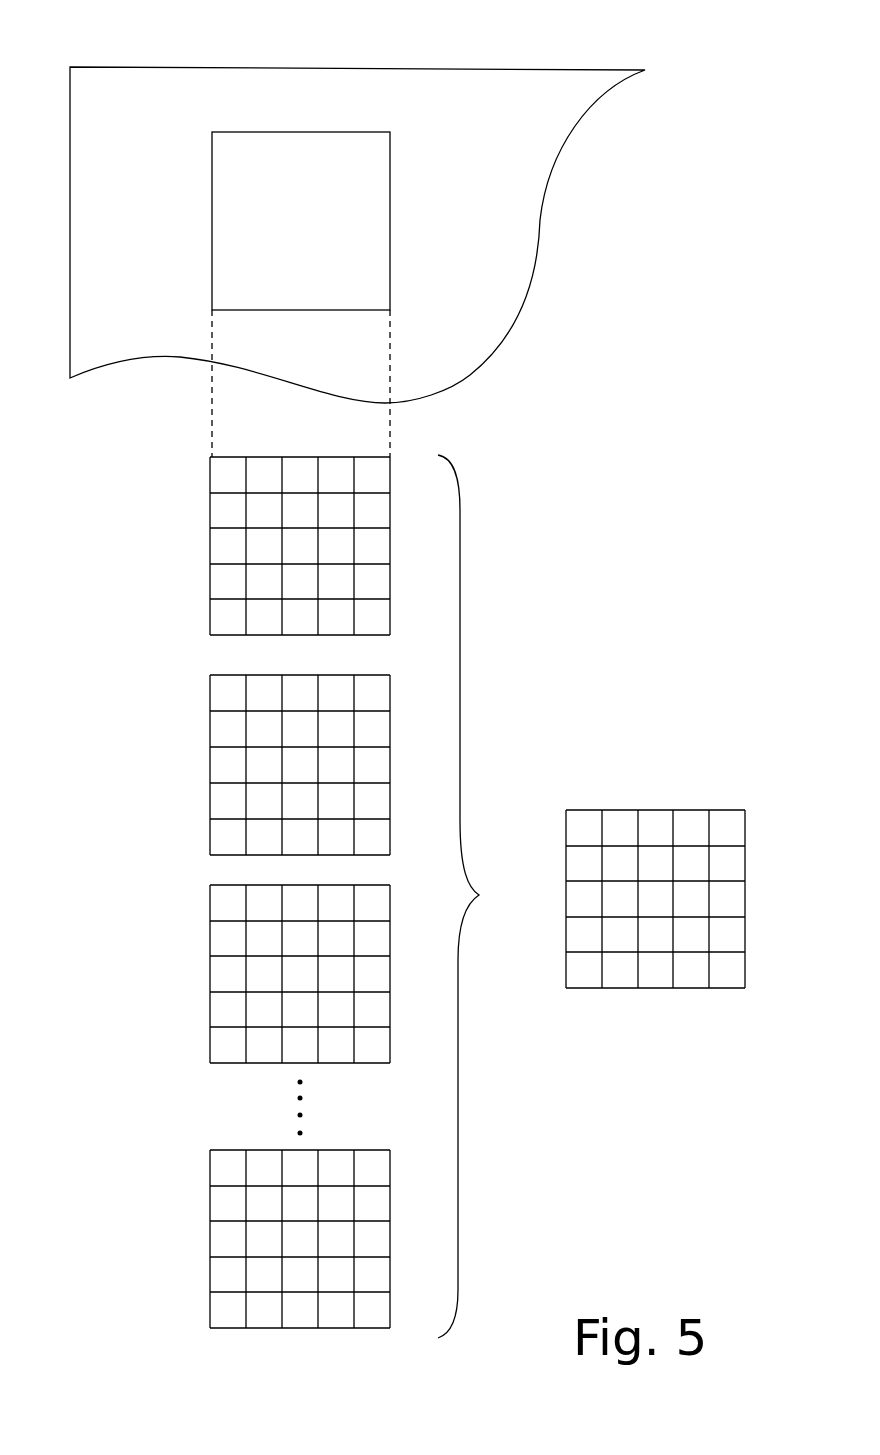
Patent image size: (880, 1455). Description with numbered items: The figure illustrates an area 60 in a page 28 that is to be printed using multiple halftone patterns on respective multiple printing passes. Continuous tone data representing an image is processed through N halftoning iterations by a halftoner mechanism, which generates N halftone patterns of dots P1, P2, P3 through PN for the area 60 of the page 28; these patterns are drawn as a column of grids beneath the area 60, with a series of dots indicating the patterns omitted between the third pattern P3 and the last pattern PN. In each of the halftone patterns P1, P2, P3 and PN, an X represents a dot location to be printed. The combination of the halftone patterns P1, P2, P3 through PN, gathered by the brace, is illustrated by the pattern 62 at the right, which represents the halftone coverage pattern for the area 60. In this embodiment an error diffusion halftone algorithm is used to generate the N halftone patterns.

The page 28 is at (110, 67).
The area 60 is at (303, 132).
The pattern 62 is at (657, 760).
The halftone pattern P1 is at (210, 511).
The halftone pattern P2 is at (210, 729).
The halftone pattern P3 is at (210, 940).
The halftone pattern PN is at (210, 1203).